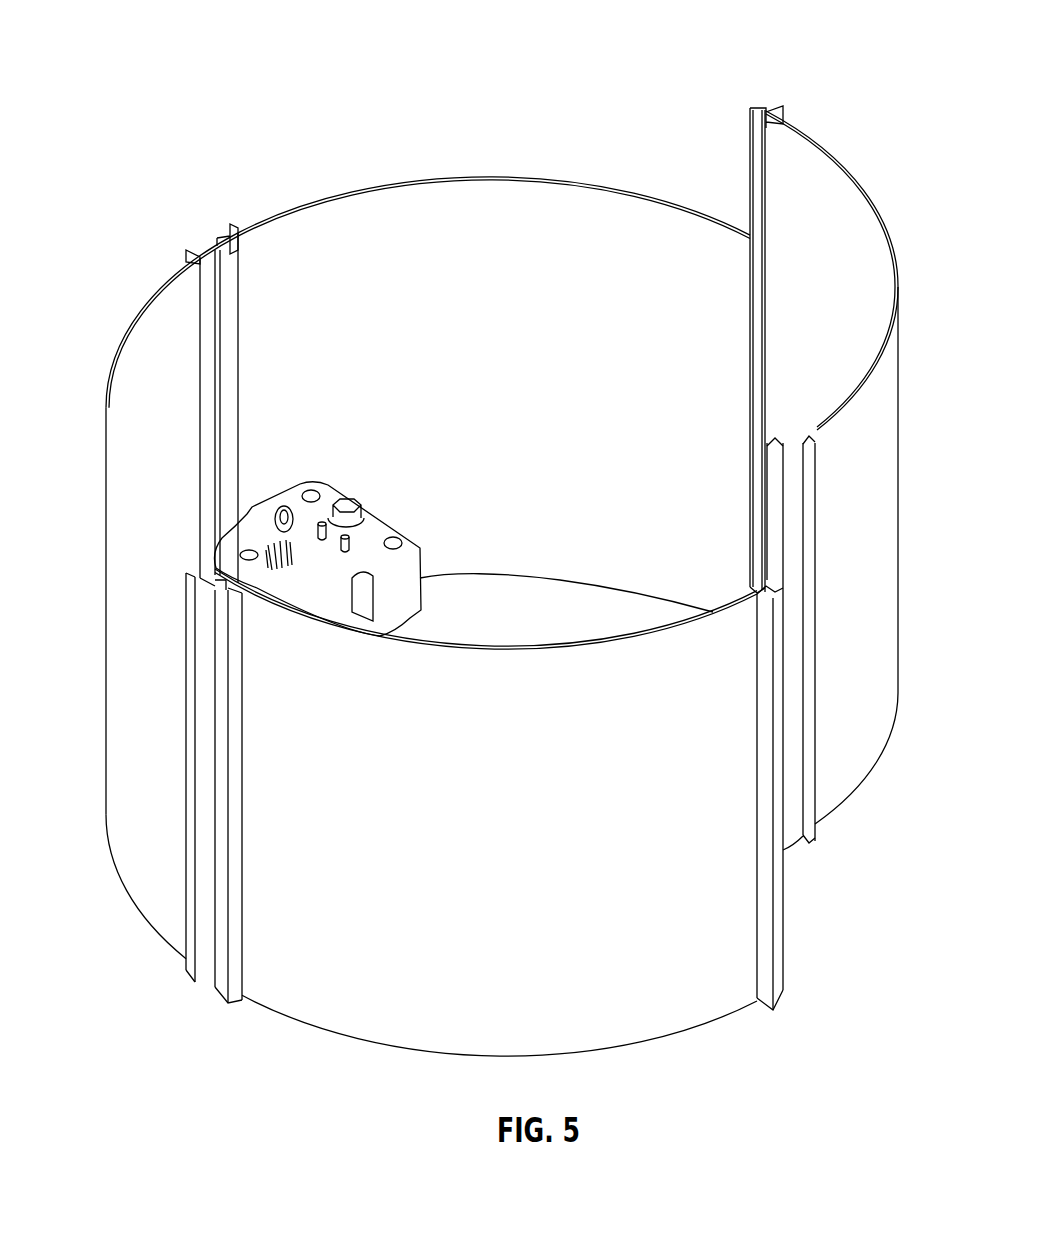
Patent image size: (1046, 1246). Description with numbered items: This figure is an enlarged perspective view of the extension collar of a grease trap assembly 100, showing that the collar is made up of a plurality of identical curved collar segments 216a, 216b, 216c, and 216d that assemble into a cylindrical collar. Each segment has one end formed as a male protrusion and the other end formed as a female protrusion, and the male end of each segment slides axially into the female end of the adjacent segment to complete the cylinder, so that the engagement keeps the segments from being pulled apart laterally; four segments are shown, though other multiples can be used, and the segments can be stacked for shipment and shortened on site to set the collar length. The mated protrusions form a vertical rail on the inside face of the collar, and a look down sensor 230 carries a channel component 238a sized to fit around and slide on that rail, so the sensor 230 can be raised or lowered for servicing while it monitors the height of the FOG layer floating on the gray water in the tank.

The enclosure assembly 100 is at (623, 85).
The curved collar segment 216a is at (857, 590).
The curved collar segment 216b is at (430, 875).
The curved collar segment 216c is at (147, 404).
The curved collar segment 216d is at (440, 270).
The look down sensor 230 is at (235, 540).
The channel component 238a is at (197, 585).